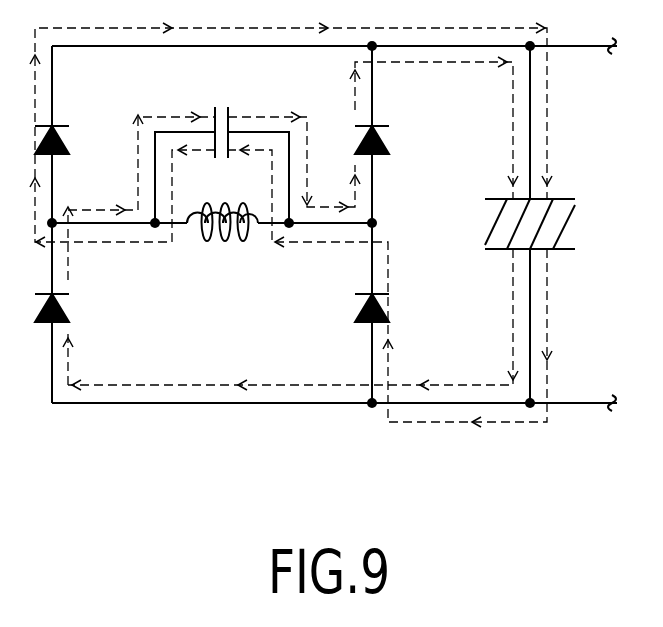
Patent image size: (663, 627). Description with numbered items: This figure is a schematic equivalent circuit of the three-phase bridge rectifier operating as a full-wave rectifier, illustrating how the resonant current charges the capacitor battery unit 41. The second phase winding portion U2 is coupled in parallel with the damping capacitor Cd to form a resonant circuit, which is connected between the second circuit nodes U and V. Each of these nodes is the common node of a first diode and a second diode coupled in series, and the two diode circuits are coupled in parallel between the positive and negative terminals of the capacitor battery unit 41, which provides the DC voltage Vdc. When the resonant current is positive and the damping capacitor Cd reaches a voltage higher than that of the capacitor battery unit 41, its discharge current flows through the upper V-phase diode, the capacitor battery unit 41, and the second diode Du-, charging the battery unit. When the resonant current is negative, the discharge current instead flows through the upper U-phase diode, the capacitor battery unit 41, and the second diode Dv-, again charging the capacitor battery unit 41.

The capacitor battery unit 41 is at (506, 198).
The damping capacitor Cd is at (231, 113).
The second phase winding portion U2 is at (222, 247).
The second diode Du- is at (76, 309).
The second diode Dv- is at (395, 309).
The DC voltage Vdc is at (583, 214).
The second circuit node U is at (31, 224).
The second circuit node V is at (386, 225).